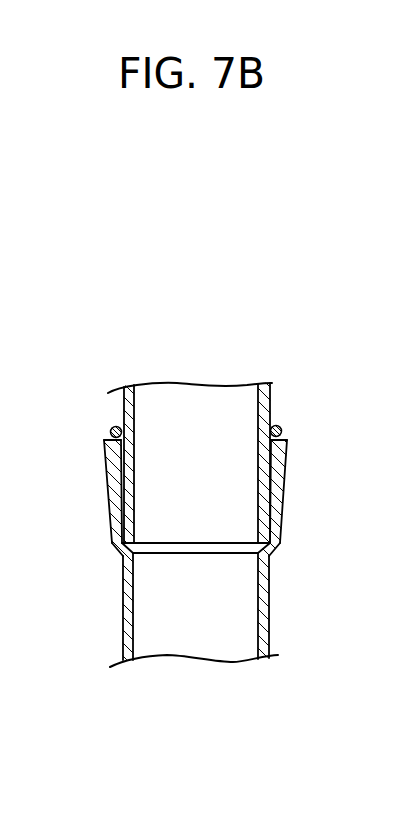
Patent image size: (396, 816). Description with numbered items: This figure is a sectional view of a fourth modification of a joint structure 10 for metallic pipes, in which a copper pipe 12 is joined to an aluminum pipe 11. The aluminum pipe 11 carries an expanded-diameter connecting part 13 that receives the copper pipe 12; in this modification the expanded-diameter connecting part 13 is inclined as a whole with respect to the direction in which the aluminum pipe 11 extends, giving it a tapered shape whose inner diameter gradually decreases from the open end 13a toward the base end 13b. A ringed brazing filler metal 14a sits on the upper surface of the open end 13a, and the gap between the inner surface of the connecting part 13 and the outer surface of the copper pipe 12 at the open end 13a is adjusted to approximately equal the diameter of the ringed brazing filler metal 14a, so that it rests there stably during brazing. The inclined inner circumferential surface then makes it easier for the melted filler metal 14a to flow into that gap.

The joint structure 10 is at (80, 383).
The aluminum pipe 11 is at (273, 603).
The copper pipe 12 is at (272, 396).
The expanded-diameter connecting part 13 is at (103, 503).
The open end 13a is at (104, 437).
The base end 13b is at (116, 557).
The ringed brazing filler metal 14a is at (111, 432).